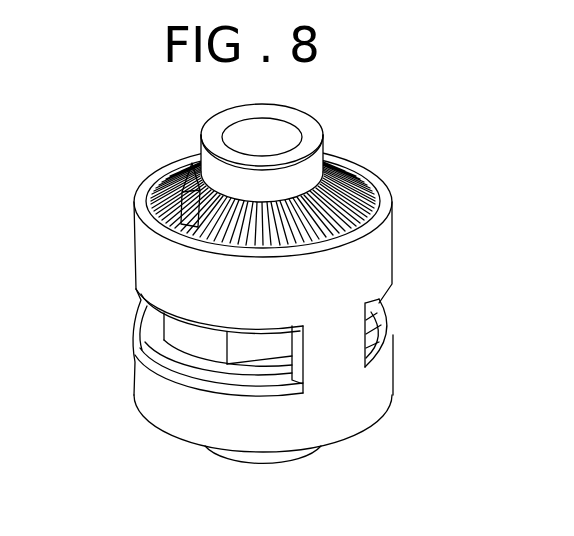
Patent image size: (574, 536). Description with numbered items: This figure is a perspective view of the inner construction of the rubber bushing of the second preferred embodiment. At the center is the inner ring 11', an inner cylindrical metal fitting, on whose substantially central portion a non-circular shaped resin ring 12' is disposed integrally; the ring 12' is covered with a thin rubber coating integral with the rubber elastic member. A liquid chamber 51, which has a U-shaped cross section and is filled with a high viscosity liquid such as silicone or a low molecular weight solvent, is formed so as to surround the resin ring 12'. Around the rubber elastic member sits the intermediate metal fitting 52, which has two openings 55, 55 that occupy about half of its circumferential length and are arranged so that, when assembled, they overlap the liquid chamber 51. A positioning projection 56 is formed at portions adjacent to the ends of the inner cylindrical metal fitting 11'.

The inner ring 11' is at (301, 149).
The resin ring 12' is at (303, 195).
The intermediate metal fitting 52 is at (380, 264).
The liquid chamber 51 is at (150, 325).
The openings 55 is at (388, 335).
The positioning projection 56 is at (175, 186).